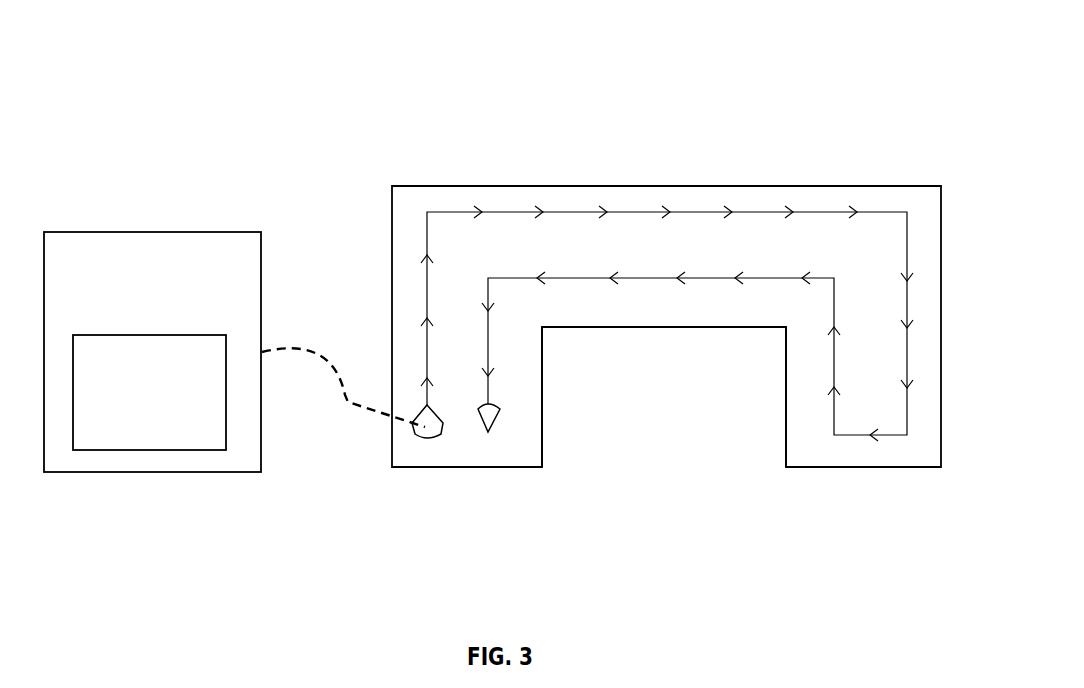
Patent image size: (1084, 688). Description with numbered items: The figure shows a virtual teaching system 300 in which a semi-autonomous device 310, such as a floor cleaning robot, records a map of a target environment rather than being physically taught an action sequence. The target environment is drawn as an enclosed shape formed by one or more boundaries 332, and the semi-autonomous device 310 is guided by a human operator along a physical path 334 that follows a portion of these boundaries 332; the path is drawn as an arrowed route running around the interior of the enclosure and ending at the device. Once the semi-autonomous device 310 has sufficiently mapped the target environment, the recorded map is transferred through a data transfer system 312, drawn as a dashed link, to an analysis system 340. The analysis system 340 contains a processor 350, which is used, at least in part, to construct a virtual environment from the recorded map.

The virtual teaching system 300 is at (829, 64).
The semi-autonomous device 310 is at (425, 432).
The data transfer system 312 is at (349, 405).
The boundaries 332 is at (786, 453).
The physical path 334 is at (868, 211).
The analysis system 340 is at (152, 352).
The processor 350 is at (149, 392).